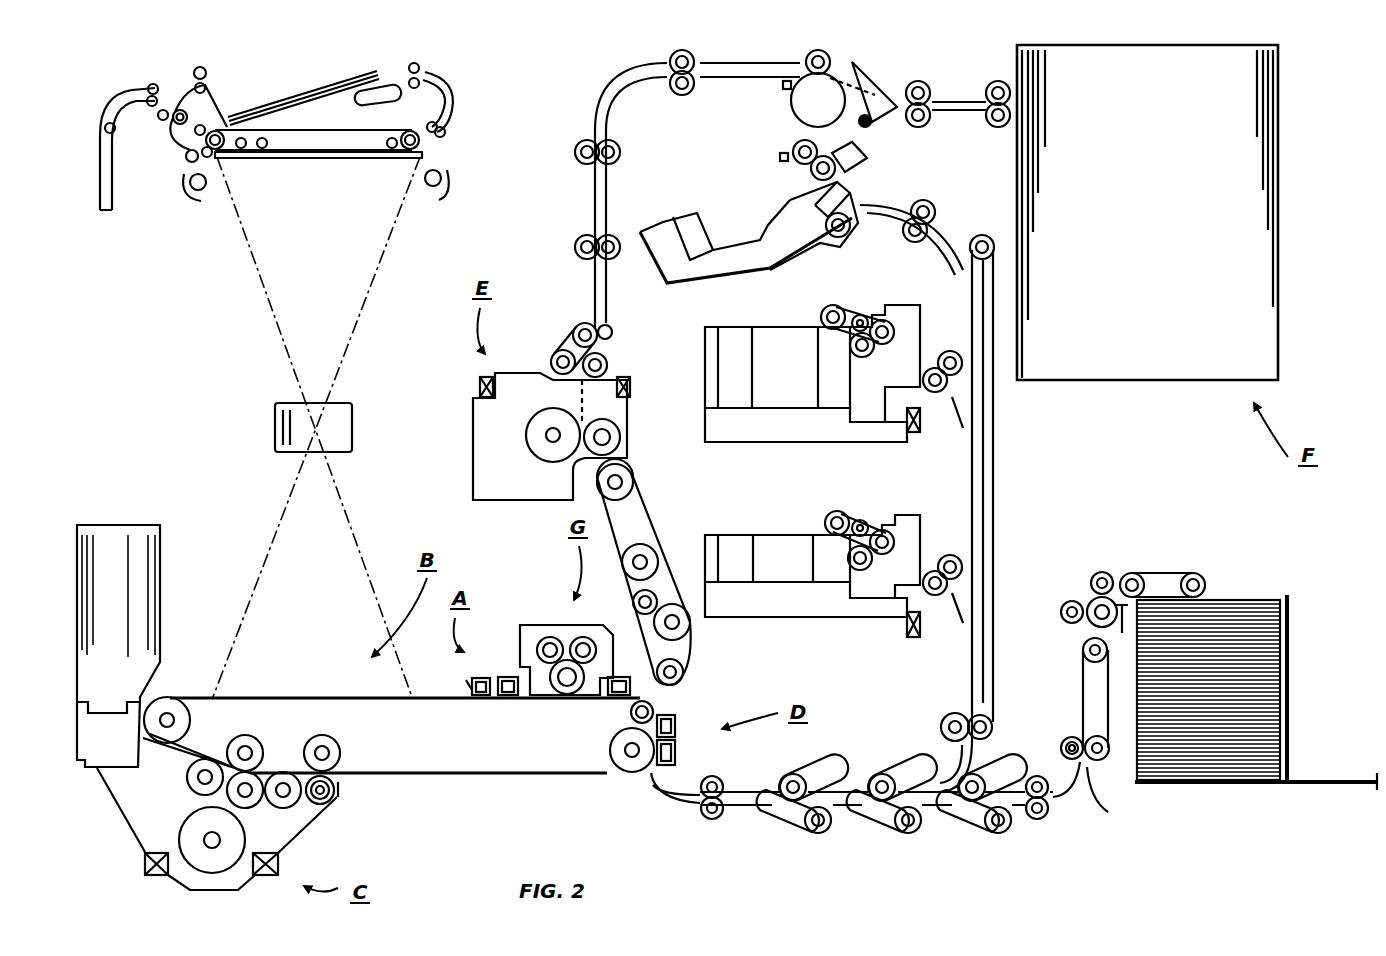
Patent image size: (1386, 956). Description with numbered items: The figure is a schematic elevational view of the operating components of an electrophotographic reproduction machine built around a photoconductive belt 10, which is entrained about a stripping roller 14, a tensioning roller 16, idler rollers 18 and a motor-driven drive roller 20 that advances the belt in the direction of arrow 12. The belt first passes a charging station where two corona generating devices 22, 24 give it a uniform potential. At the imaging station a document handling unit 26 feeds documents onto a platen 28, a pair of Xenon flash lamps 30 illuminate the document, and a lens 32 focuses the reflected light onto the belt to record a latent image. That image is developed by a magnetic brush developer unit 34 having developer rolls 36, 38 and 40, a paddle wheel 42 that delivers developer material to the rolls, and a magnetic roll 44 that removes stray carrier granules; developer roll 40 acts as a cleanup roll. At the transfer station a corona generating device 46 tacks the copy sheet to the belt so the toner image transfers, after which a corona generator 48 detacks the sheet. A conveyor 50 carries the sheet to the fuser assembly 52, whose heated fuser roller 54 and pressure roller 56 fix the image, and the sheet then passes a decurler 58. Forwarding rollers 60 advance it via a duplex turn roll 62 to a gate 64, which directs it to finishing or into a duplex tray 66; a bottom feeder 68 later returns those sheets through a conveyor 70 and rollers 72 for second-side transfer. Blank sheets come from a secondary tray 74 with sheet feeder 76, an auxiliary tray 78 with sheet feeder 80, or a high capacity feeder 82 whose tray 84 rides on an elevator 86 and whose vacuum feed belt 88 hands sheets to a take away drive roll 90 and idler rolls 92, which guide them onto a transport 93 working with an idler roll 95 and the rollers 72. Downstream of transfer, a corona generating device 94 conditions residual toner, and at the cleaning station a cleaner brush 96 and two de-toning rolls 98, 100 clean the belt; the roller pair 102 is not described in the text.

The photoconductive belt 10 is at (443, 700).
The arrow 12 is at (503, 790).
The stripping roller 14 is at (630, 713).
The tensioning roller 16 is at (178, 712).
The idler rollers 18 is at (305, 733).
The drive roller 20 is at (615, 755).
The corona generating device 22 is at (503, 677).
The corona generating device 24 is at (468, 678).
The document handling unit 26 is at (478, 101).
The platen 28 is at (362, 160).
The Xenon flash lamps 30 is at (437, 187).
The lens 32 is at (342, 427).
The magnetic brush developer unit 34 is at (335, 824).
The developer roll 36 is at (177, 797).
The developer roll 38 is at (205, 803).
The developer roll 40 is at (269, 816).
The paddle wheel 42 is at (145, 858).
The magnetic roll 44 is at (340, 797).
The corona generating device 46 is at (673, 753).
The corona generator 48 is at (672, 717).
The conveyor 50 is at (693, 653).
The fuser assembly 52 is at (652, 390).
The heated fuser roller 54 is at (535, 443).
The pressure roller 56 is at (607, 437).
The decurler 58 is at (570, 348).
The forwarding rollers 60 is at (575, 247).
The duplex turn roll 62 is at (830, 107).
The gate 64 is at (870, 88).
The duplex tray 66 is at (730, 245).
The bottom feeder 68 is at (833, 240).
The conveyor 70 is at (1000, 470).
The rollers 72 is at (1047, 817).
The secondary tray 74 is at (813, 435).
The sheet feeder 76 is at (862, 305).
The auxiliary tray 78 is at (862, 608).
The sheet feeder 80 is at (843, 517).
The high capacity feeder 82 is at (1312, 577).
The tray 84 is at (1235, 753).
The elevator 86 is at (1248, 780).
The vacuum feed belt 88 is at (1167, 575).
The take away drive roll 90 is at (1100, 628).
The idler rolls 92 is at (1066, 600).
The transport 93 is at (1082, 690).
The idler roll 95 is at (1097, 794).
The corona generating device 94 is at (675, 684).
The cleaner brush 96 is at (548, 623).
The de-toning roll 98 is at (580, 642).
The de-toning roll 100 is at (540, 645).
The roller pairs 102 is at (1005, 82).